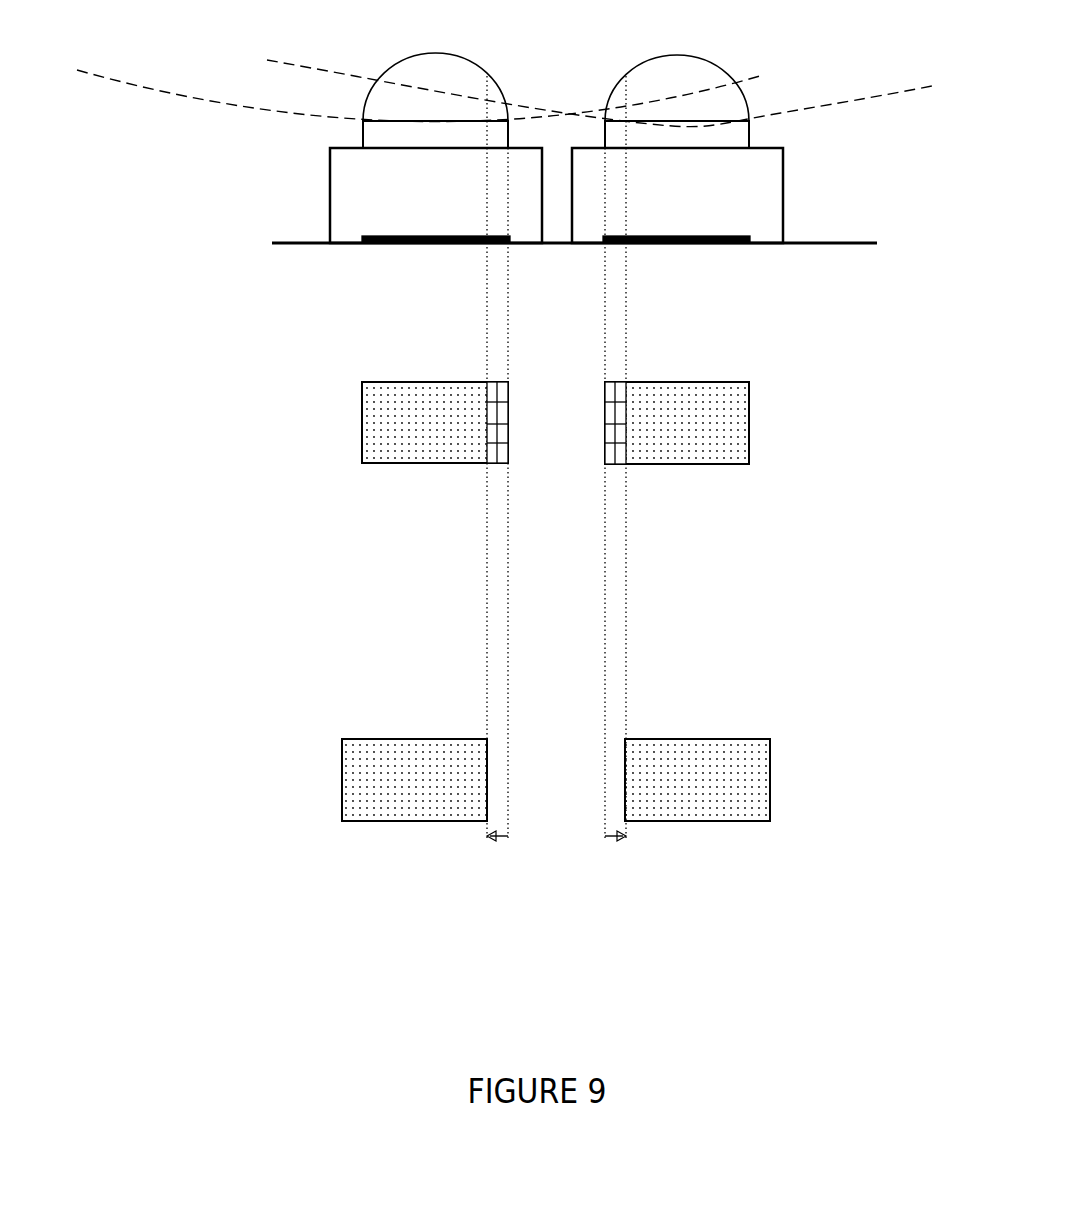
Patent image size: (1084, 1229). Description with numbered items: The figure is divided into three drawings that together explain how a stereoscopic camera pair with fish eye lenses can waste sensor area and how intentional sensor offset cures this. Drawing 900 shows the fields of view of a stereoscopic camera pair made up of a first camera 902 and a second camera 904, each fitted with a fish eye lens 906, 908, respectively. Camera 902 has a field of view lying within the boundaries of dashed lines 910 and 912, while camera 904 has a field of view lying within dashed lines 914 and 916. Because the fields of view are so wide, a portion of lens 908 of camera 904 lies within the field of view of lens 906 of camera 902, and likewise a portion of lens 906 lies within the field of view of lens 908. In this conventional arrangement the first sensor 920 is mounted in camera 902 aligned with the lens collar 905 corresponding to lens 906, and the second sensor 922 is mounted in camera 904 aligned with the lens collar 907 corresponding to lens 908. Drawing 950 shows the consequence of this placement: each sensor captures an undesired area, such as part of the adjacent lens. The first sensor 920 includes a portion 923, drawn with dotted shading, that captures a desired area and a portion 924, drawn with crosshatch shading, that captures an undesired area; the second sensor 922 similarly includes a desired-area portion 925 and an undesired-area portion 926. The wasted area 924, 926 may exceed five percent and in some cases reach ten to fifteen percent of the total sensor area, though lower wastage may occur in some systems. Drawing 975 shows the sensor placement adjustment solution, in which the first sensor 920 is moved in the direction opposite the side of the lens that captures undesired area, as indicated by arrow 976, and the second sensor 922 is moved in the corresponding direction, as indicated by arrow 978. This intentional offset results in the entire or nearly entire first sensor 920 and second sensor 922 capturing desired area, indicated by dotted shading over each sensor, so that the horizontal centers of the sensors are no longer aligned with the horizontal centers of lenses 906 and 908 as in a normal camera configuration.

The drawing of stereoscopic camera pair field of view 900 is at (266, 26).
The camera 902 is at (330, 197).
The camera 904 is at (783, 216).
The lens collar 905 is at (362, 138).
The fish eye lens 906 is at (440, 54).
The lens collar 907 is at (750, 133).
The fish eye lens 908 is at (640, 64).
The dashed line 910 is at (100, 76).
The dashed line 912 is at (767, 74).
The dashed line 914 is at (308, 69).
The dashed line 916 is at (912, 90).
The sensor S1 920 is at (403, 224).
The sensor S2 922 is at (700, 223).
The portion capturing desired area 923 is at (392, 412).
The portion capturing undesired area 924 is at (502, 441).
The portion capturing desired area 925 is at (720, 423).
The portion capturing undesired area 926 is at (620, 435).
The drawing of wasted sensor area 950 is at (302, 350).
The drawing of sensor placement adjustment solution 975 is at (294, 668).
The arrow 976 is at (500, 841).
The arrow 978 is at (622, 841).